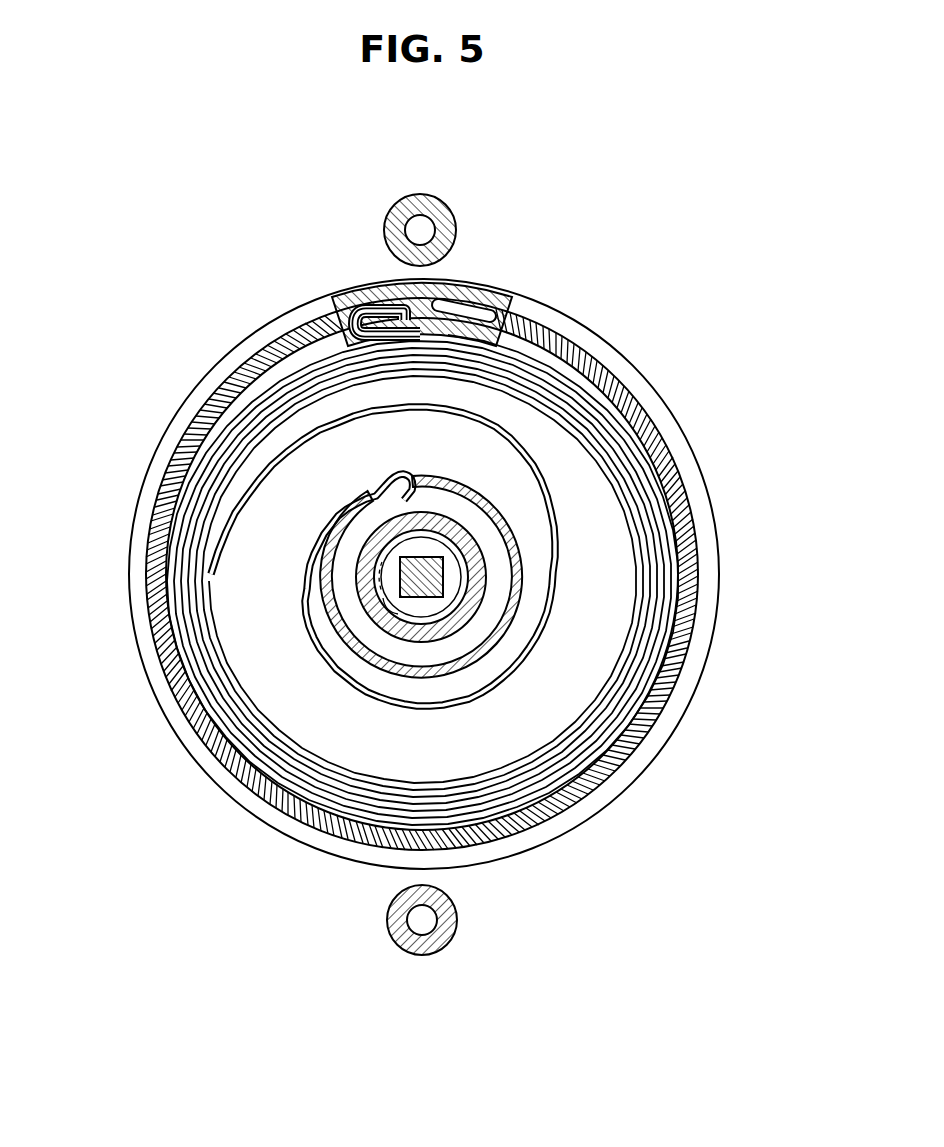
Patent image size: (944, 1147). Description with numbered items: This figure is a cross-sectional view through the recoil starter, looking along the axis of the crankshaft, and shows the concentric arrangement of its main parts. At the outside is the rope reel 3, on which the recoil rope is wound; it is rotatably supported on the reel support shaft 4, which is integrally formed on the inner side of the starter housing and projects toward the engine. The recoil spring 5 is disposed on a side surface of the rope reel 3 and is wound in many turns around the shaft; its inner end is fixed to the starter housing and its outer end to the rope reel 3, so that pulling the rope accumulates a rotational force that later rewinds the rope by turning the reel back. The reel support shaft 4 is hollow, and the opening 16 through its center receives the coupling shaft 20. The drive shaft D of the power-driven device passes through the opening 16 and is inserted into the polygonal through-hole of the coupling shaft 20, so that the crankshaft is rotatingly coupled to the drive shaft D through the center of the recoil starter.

The rope reel 3 is at (547, 340).
The recoil spring 5 is at (547, 500).
The reel support shaft 4 is at (330, 582).
The coupling shaft 20 is at (400, 560).
The opening 16 is at (407, 597).
The drive shaft D is at (427, 597).